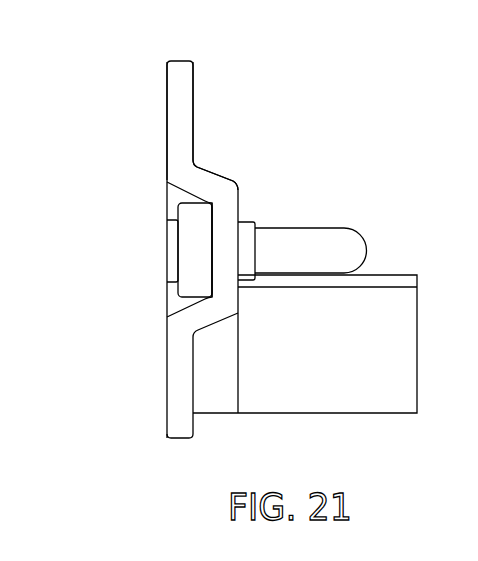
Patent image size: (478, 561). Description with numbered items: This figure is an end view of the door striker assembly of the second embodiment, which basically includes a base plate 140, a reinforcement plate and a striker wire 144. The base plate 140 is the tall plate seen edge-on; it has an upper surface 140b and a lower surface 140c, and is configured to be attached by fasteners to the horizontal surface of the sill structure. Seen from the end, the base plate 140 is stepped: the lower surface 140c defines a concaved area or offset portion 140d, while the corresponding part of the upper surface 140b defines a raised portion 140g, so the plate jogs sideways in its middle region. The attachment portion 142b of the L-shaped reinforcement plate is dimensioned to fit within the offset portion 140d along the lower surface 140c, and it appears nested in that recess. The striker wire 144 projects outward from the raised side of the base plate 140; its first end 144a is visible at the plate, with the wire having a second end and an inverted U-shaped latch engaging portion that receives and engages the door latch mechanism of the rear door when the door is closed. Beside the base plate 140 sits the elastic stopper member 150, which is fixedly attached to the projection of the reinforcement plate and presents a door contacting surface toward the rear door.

The base plate 140 is at (180, 83).
The upper surface 140b is at (194, 127).
The lower surface 140c is at (166, 112).
The offset portion 140d is at (207, 250).
The raised portion 140g is at (205, 187).
The attachment portion 142b is at (195, 275).
The first end 144a is at (174, 232).
The striker wire 144 is at (303, 248).
The elastic stopper member 150 is at (338, 373).